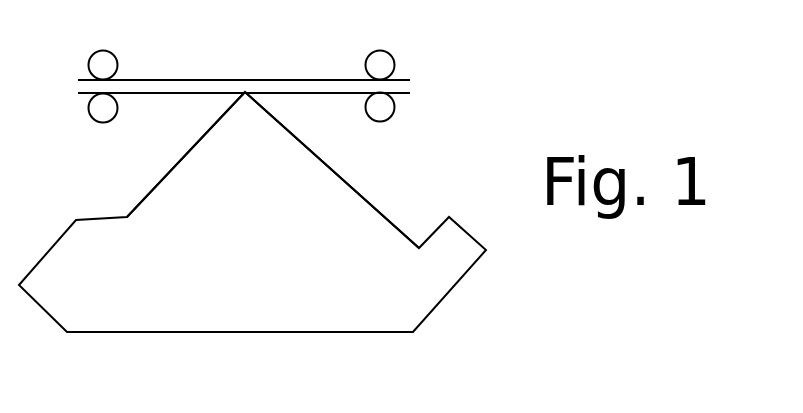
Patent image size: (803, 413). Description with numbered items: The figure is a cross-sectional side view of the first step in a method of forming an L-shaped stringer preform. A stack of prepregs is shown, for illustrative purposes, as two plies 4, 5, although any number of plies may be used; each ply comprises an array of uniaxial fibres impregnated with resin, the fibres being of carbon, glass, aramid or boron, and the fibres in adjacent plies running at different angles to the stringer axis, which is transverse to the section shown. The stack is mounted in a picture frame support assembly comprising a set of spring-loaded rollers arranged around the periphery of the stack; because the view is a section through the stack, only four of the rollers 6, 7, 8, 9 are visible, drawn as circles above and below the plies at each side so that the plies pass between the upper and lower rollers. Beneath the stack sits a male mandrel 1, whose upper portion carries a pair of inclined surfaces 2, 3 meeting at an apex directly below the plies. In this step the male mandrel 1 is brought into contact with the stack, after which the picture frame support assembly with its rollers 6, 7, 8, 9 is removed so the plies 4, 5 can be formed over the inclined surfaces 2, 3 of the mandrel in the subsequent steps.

The male mandrel 1 is at (422, 325).
The inclined surface 2 is at (163, 173).
The inclined surface 3 is at (353, 183).
The ply 4 is at (290, 78).
The ply 5 is at (340, 95).
The roller 6 is at (118, 62).
The roller 7 is at (118, 105).
The roller 8 is at (394, 62).
The roller 9 is at (394, 104).